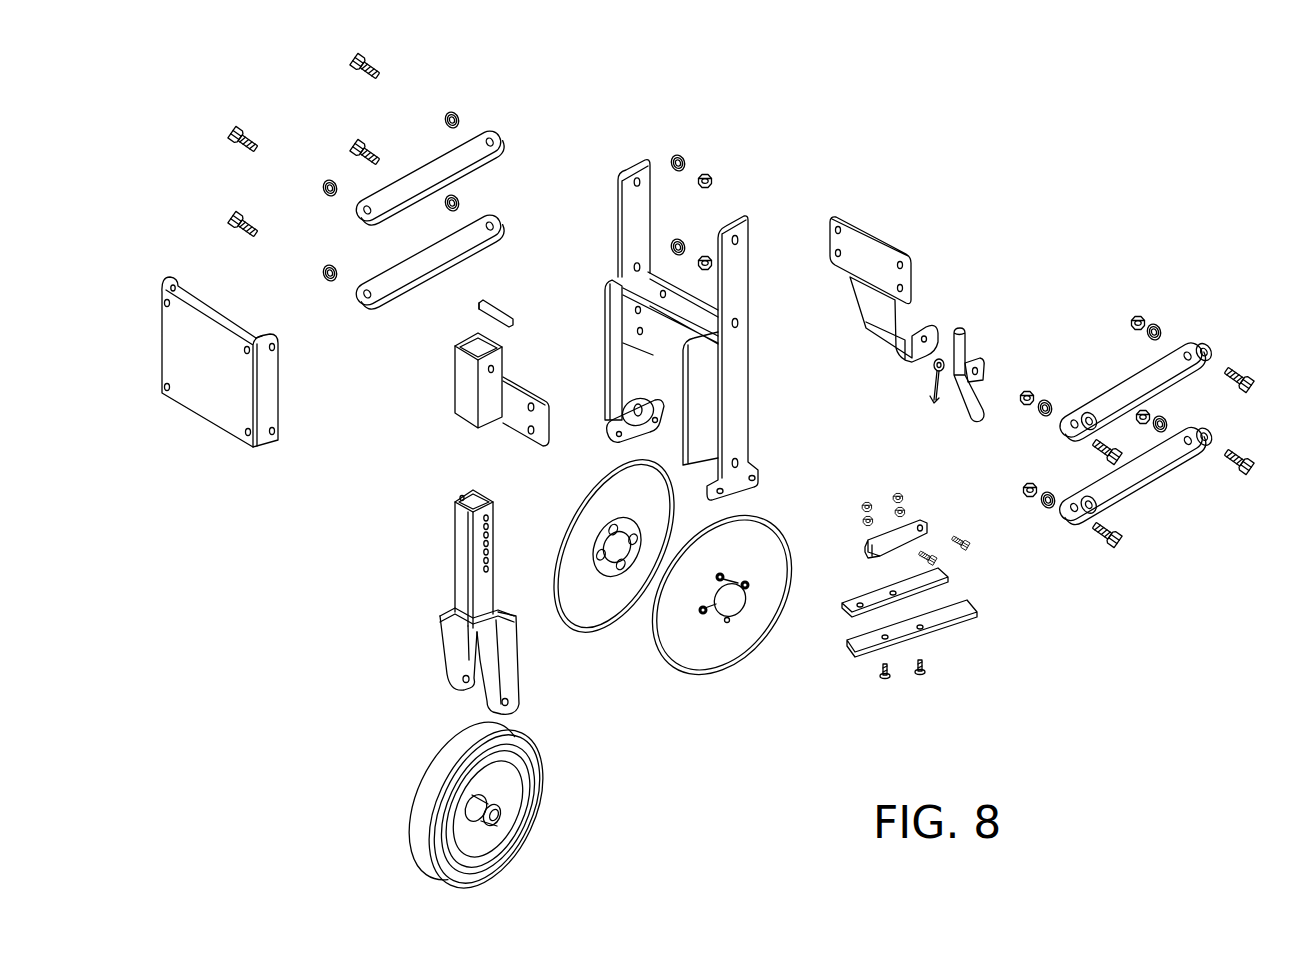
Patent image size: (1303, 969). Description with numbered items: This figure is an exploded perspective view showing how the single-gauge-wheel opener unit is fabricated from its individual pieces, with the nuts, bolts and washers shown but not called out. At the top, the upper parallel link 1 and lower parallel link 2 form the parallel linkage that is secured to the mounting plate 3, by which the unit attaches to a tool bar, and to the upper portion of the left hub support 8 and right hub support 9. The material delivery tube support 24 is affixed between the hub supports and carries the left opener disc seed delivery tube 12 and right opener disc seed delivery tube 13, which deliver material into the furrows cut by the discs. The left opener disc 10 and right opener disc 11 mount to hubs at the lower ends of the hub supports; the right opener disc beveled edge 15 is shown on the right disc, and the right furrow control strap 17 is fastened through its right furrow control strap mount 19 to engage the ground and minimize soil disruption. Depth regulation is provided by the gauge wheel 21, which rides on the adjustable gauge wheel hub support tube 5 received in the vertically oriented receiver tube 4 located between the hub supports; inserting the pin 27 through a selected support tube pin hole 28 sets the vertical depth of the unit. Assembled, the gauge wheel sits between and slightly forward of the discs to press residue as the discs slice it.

The upper parallel link 1 is at (488, 128).
The lower parallel link 2 is at (402, 284).
The mounting plate 3 is at (210, 405).
The receiver tube 4 is at (455, 383).
The adjustable gauge wheel hub support tube 5 is at (481, 602).
The left hub support 8 is at (750, 382).
The right hub support 9 is at (632, 163).
The left opener disc 10 is at (713, 650).
The right opener disc 11 is at (600, 606).
The left opener disc seed delivery tube 12 is at (999, 367).
The right opener disc seed delivery tube 13 is at (968, 345).
The right opener disc beveled edge 15 is at (957, 623).
The right furrow control strap 17 is at (972, 600).
The right furrow control strap mount 19 is at (865, 547).
The gauge wheel 21 is at (420, 790).
The material delivery tube support 24 is at (870, 230).
The pin 27 is at (490, 300).
The support tube pin hole 28 is at (492, 535).